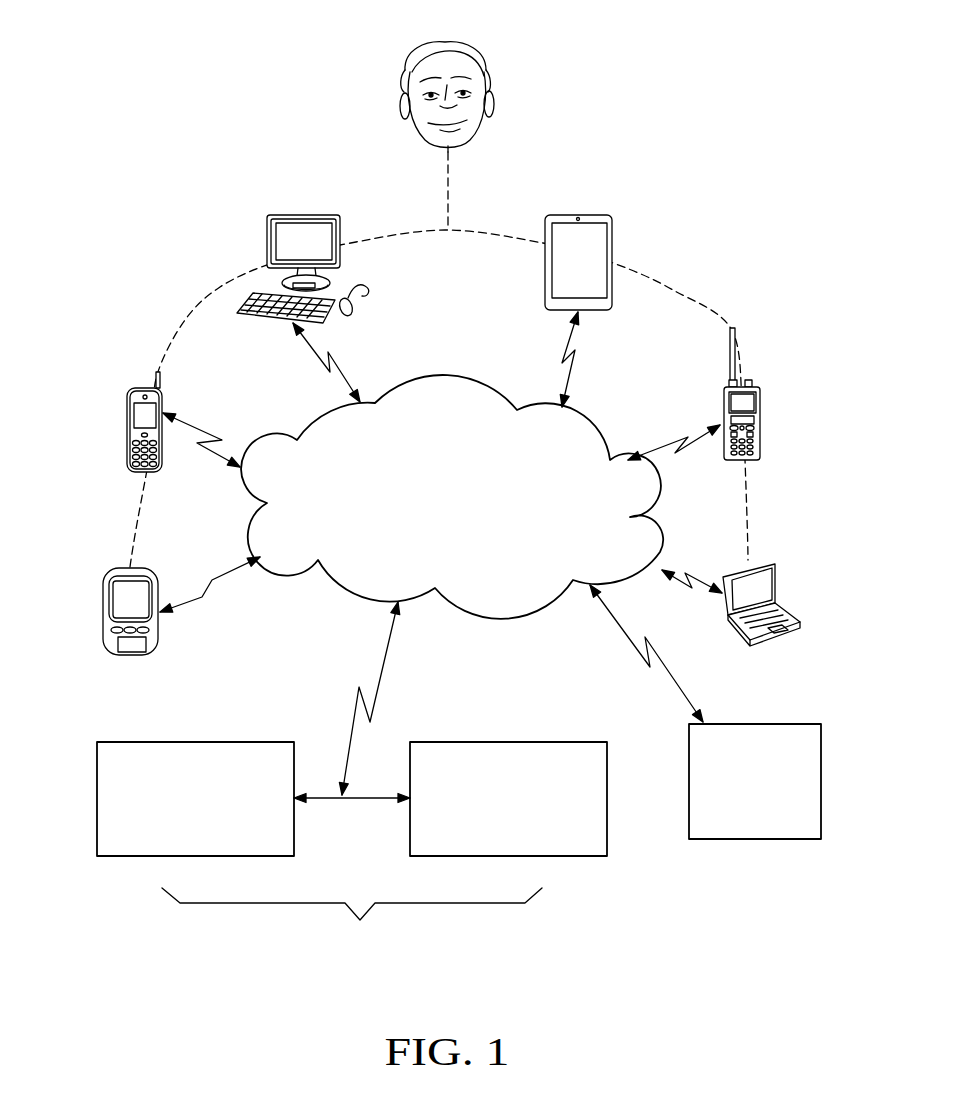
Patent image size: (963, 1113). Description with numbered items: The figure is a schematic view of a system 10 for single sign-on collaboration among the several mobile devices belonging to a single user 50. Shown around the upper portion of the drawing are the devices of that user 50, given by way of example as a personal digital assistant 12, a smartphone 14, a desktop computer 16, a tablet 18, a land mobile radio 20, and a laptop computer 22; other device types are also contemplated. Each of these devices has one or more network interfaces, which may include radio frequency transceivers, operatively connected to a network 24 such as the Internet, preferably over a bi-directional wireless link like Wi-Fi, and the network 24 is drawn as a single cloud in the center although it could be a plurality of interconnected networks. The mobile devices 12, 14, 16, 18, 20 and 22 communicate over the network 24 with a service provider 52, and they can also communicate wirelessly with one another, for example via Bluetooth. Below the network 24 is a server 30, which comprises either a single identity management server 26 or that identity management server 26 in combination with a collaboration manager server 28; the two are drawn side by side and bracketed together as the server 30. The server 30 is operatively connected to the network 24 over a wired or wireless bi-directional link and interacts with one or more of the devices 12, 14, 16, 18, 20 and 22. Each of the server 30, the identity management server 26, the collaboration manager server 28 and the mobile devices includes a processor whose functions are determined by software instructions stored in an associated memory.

The system 10 is at (197, 102).
The personal digital assistant 12 is at (103, 603).
The smartphone 14 is at (127, 430).
The desktop computer 16 is at (298, 215).
The tablet 18 is at (612, 234).
The land mobile radio (LMR) 20 is at (760, 408).
The laptop computer 22 is at (775, 590).
The network 24 is at (515, 602).
The identity management server (IdM) 26 is at (97, 792).
The collaboration manager server (CM) 28 is at (593, 856).
The server 30 is at (352, 919).
The user 50 is at (480, 62).
The service provider (SP) 52 is at (795, 839).